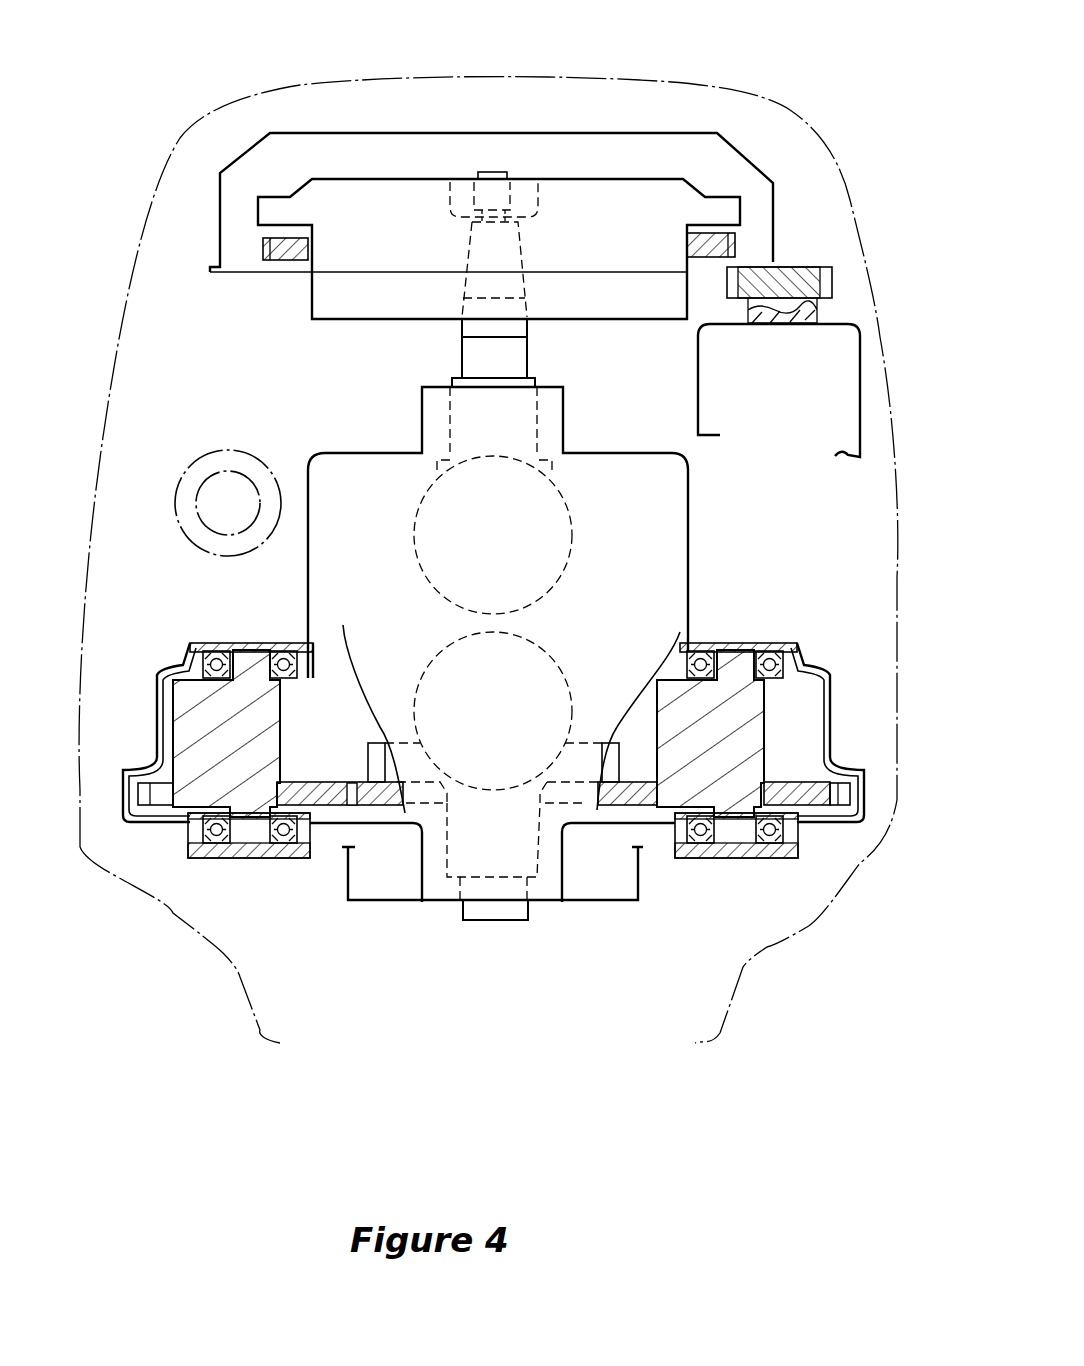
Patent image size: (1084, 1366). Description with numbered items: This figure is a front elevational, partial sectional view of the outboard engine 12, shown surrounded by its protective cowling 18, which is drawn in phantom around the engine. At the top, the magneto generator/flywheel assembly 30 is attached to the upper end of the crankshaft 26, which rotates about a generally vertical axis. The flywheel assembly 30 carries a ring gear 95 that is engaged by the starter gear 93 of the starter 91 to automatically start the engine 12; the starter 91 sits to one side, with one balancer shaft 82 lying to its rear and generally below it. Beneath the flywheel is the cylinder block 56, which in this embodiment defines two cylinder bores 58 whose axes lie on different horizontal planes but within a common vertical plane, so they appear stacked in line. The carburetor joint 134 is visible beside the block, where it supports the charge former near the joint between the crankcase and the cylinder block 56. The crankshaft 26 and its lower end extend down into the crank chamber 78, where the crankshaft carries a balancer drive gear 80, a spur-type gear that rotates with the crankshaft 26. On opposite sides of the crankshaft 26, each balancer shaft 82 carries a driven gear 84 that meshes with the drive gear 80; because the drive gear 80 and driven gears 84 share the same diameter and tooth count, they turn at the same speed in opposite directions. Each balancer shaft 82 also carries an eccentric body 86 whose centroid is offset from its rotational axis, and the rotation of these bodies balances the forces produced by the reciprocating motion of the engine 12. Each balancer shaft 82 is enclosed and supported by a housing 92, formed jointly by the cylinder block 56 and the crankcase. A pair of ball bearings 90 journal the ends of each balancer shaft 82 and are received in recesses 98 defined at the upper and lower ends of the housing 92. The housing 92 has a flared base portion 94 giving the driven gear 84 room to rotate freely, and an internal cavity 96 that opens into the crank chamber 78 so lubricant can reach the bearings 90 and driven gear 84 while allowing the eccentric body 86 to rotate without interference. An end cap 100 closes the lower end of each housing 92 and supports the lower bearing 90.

The protective cowling 18 is at (667, 83).
The engine 12 is at (282, 373).
The magneto generator/flywheel assembly 30 is at (717, 197).
The ring gear 95 is at (717, 233).
The starter gear 93 is at (805, 265).
The starter 91 is at (863, 370).
The crankshaft 26 is at (447, 357).
The cylinder block 56 is at (688, 553).
The cylinder bores 58 is at (572, 530).
The carburetor joint 134 is at (237, 447).
The balancer shaft 82 is at (162, 623).
The crank chamber 78 is at (330, 650).
The eccentric body 86 is at (282, 720).
The bearings 90 is at (198, 645).
The recesses 98 is at (300, 643).
The housing 92 is at (153, 700).
The internal cavity 96 is at (168, 753).
The flared base portion 94 is at (122, 792).
The driven gear 84 is at (320, 795).
The balancer drive gear 80 is at (387, 807).
The end cap 100 is at (262, 855).